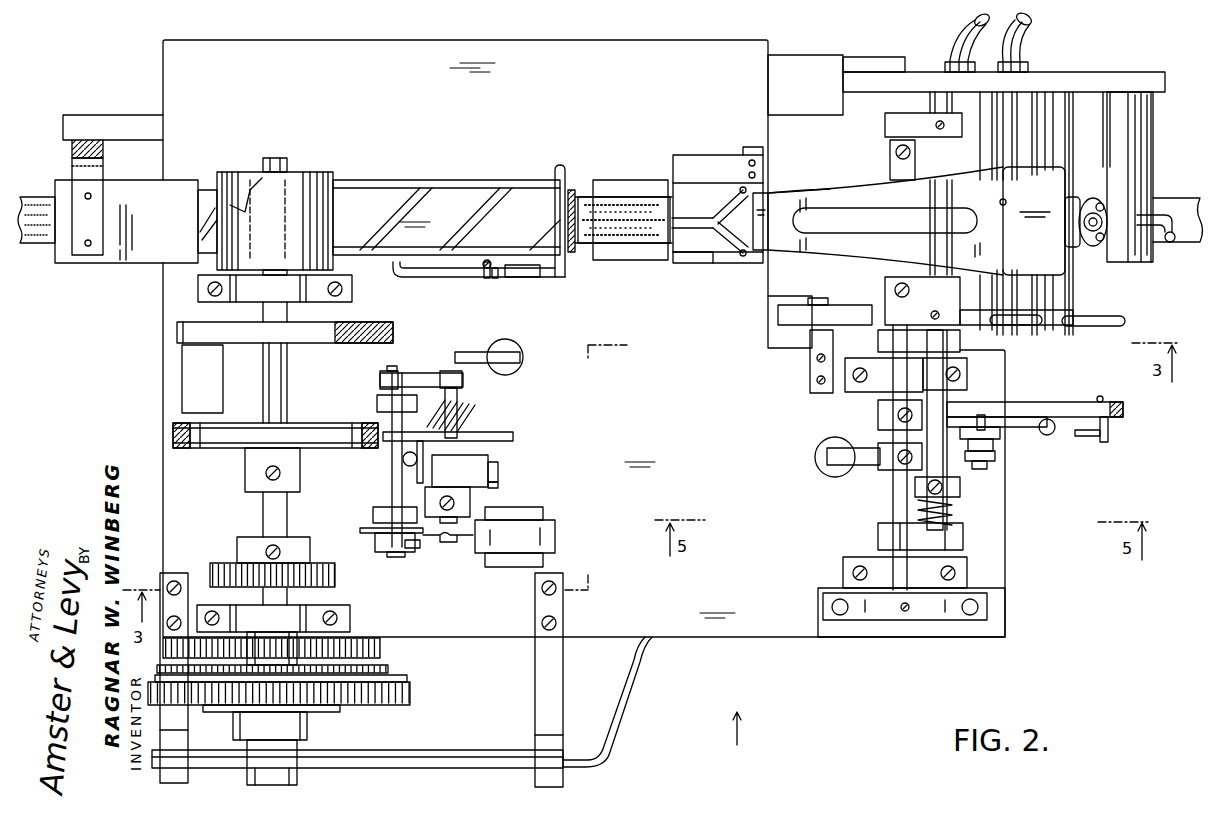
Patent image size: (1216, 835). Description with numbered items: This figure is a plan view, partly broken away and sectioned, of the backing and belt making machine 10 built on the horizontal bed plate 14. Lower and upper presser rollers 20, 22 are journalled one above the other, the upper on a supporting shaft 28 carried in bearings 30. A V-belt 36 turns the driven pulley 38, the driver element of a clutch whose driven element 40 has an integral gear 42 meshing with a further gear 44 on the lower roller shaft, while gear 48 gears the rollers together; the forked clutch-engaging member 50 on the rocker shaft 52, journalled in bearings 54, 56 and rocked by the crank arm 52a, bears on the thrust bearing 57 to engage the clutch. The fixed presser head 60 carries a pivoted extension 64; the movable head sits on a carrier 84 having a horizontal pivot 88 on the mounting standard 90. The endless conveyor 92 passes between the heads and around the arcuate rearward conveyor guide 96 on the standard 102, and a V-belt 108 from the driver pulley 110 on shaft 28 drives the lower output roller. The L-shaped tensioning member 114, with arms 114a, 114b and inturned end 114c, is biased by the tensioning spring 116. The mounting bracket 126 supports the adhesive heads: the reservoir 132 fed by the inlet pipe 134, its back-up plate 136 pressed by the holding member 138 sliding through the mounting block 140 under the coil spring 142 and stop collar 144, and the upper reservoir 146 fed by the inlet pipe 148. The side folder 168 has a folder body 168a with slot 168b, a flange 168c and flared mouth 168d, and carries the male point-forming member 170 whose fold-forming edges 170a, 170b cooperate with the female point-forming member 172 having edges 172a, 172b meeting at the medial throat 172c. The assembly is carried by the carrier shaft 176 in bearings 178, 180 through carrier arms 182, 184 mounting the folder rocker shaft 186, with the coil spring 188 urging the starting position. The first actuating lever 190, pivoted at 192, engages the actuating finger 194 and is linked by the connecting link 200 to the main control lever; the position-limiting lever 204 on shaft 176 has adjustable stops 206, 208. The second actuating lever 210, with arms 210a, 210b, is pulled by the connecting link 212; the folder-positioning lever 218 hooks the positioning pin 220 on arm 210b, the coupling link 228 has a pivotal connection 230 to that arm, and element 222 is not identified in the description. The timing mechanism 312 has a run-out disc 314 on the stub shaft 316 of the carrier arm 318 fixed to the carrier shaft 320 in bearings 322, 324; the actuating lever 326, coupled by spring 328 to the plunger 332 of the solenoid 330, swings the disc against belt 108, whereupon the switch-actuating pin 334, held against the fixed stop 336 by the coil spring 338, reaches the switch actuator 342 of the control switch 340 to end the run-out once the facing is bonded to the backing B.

The backing and belt making machine 10 is at (747, 736).
The bed plate 14 is at (743, 627).
The lower presser roller 20 is at (233, 182).
The upper presser roller 22 is at (306, 178).
The supporting shaft 28 is at (288, 378).
The bearings 30 is at (198, 285).
The V-belt 36 is at (410, 690).
The driven pulley 38 is at (360, 711).
The driven element 40 is at (388, 669).
The integral gear 42 is at (272, 645).
The further gear 44 is at (380, 645).
The meshing gear 48 is at (210, 570).
The clutch-engaging member 50 is at (255, 775).
The rocker shaft 52 is at (440, 768).
The crank arm 52a is at (628, 676).
The bearing 54 is at (170, 785).
The bearing 56 is at (540, 785).
The thrust bearing 57 is at (307, 730).
The fixed presser head 60 is at (385, 182).
The extension 64 is at (605, 180).
The carrier 84 is at (355, 322).
The horizontal pivot 88 is at (195, 320).
The mounting standard 90 is at (182, 380).
The endless conveyor 92 is at (426, 195).
The rearward conveyor guide 96 is at (110, 263).
The standard 102 is at (72, 142).
The V-belt 108 is at (173, 435).
The driver pulley 110 is at (215, 452).
The tensioning member 114 is at (499, 288).
The arm 114a is at (420, 280).
The arm 114b is at (520, 280).
The inturned end 114c is at (554, 172).
The tensioning spring 116 is at (483, 274).
The mounting bracket 126 is at (862, 57).
The cylindrical reservoir 132 is at (1023, 213).
The adhesive inlet pipe 134 is at (1035, 26).
The back-up plate 136 is at (1070, 222).
The holding member 138 is at (1172, 245).
The mounting block 140 is at (1153, 126).
The coil spring 142 is at (1100, 202).
The stop collar 144 is at (1100, 242).
The reservoir 146 is at (939, 140).
The inlet pipe 148 is at (950, 34).
The side folder 168 is at (826, 191).
The folder body 168a is at (796, 190).
The slot 168b is at (828, 210).
The flange 168c is at (1034, 221).
The flared mouth 168d is at (1000, 201).
The male point-forming member 170 is at (756, 230).
The fold-forming edge 170a is at (728, 226).
The fold-forming edge 170b is at (728, 212).
The female point-forming member 172 is at (689, 175).
The fold-forming edge 172a is at (743, 257).
The fold-forming edge 172b is at (745, 186).
The medial throat 172c is at (700, 262).
The carrier shaft 176 is at (893, 505).
The bearing 178 is at (843, 572).
The bearing 180 is at (865, 385).
The carrier arm 182 is at (878, 540).
The carrier arm 184 is at (878, 342).
The folder rocker shaft 186 is at (940, 372).
The coil spring 188 is at (958, 512).
The first actuating lever 190 is at (800, 305).
The pivot 192 is at (815, 342).
The actuating finger 194 is at (885, 305).
The connecting link 200 is at (768, 320).
The position-limiting lever 204 is at (878, 622).
The adjustable stop 206 is at (830, 605).
The adjustable stop 208 is at (968, 617).
The second actuating lever 210 is at (874, 433).
The arm 210a is at (827, 456).
The arm 210b is at (1115, 402).
The connecting link 212 is at (825, 470).
The folder-positioning lever 218 is at (1025, 405).
The positioning pin 220 is at (982, 412).
The bracket 222 is at (1000, 458).
The coupling link 228 is at (1085, 437).
The pivotal connection 230 is at (1108, 435).
The electromechanical timing mechanism 312 is at (548, 409).
The run-out disc 314 is at (513, 436).
The central stub shaft 316 is at (452, 370).
The carrier arm 318 is at (420, 373).
The carrier shaft 320 is at (388, 478).
The bearing 322 is at (373, 512).
The bearing 324 is at (377, 403).
The actuating lever 326 is at (365, 532).
The spring 328 is at (412, 548).
The solenoid 330 is at (555, 525).
The plunger 332 is at (460, 545).
The switch-actuating pin 334 is at (440, 470).
The fixed stop 336 is at (403, 459).
The coil spring 338 is at (472, 410).
The control switch 340 is at (498, 468).
The switch actuator 342 is at (498, 484).
The backing B is at (630, 243).